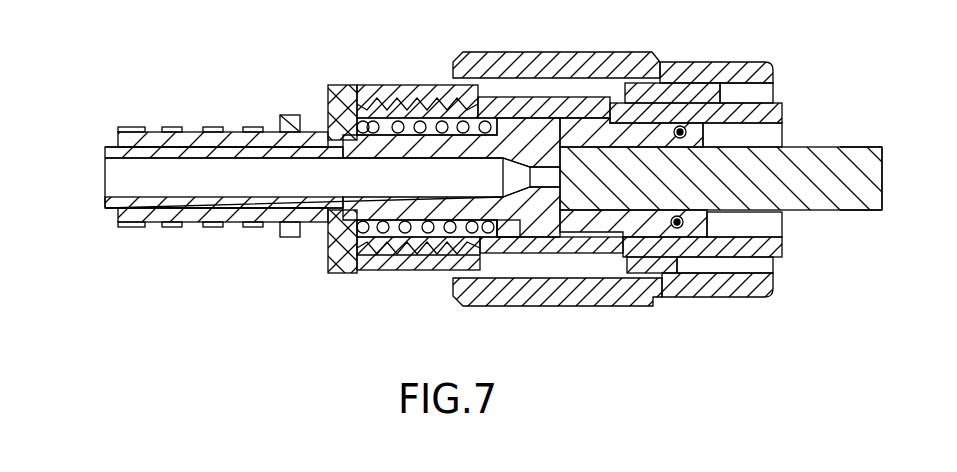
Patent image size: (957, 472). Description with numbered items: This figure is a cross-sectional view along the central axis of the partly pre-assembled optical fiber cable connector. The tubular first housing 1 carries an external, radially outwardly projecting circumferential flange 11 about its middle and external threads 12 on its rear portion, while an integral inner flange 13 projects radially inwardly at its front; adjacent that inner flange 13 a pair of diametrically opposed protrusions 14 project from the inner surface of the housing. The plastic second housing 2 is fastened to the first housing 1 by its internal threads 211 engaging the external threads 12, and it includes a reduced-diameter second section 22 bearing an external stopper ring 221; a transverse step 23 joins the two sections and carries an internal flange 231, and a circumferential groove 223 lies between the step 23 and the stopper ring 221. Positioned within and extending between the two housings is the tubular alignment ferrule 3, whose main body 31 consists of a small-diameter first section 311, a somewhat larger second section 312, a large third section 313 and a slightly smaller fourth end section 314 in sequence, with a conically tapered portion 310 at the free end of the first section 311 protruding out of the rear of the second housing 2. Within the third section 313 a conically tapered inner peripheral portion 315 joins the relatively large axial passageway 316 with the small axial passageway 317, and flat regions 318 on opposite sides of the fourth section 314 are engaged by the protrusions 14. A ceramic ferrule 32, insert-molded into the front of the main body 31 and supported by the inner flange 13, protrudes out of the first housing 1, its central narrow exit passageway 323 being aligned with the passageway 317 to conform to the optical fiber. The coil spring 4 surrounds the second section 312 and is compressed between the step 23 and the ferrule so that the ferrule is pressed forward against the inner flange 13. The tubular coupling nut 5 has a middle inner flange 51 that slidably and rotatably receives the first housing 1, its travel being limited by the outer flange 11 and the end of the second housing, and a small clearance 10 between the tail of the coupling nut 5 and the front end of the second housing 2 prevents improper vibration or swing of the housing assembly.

The first housing 1 is at (788, 250).
The second housing 2 is at (335, 276).
The alignment ferrule 3 is at (543, 241).
The coil spring 4 is at (430, 246).
The coupling nut 5 is at (695, 299).
The small clearance 10 is at (457, 79).
The circumferential flange 11 is at (630, 222).
The external threads 12 is at (373, 256).
The inner flange 13 is at (707, 137).
The protrusions 14 is at (714, 76).
The second section 22 is at (270, 220).
The step 23 is at (347, 110).
The main body 31 is at (575, 212).
The ceramic ferrule 32 is at (857, 202).
The inner flange 51 is at (617, 90).
The internal threads 211 is at (423, 107).
The stopper ring 221 is at (298, 117).
The circumferential groove 223 is at (312, 232).
The inner flange 231 is at (343, 140).
The conically tapered portion 310 is at (120, 150).
The first section 311 is at (188, 203).
The second section 312 is at (405, 236).
The third section 313 is at (510, 228).
The fourth section 314 is at (620, 259).
The conically tapered inner peripheral portion 315 is at (513, 166).
The large axial passageway 316 is at (405, 162).
The small axial passageway 317 is at (548, 170).
The flat regions 318 is at (665, 264).
The exit passageway 323 is at (845, 177).